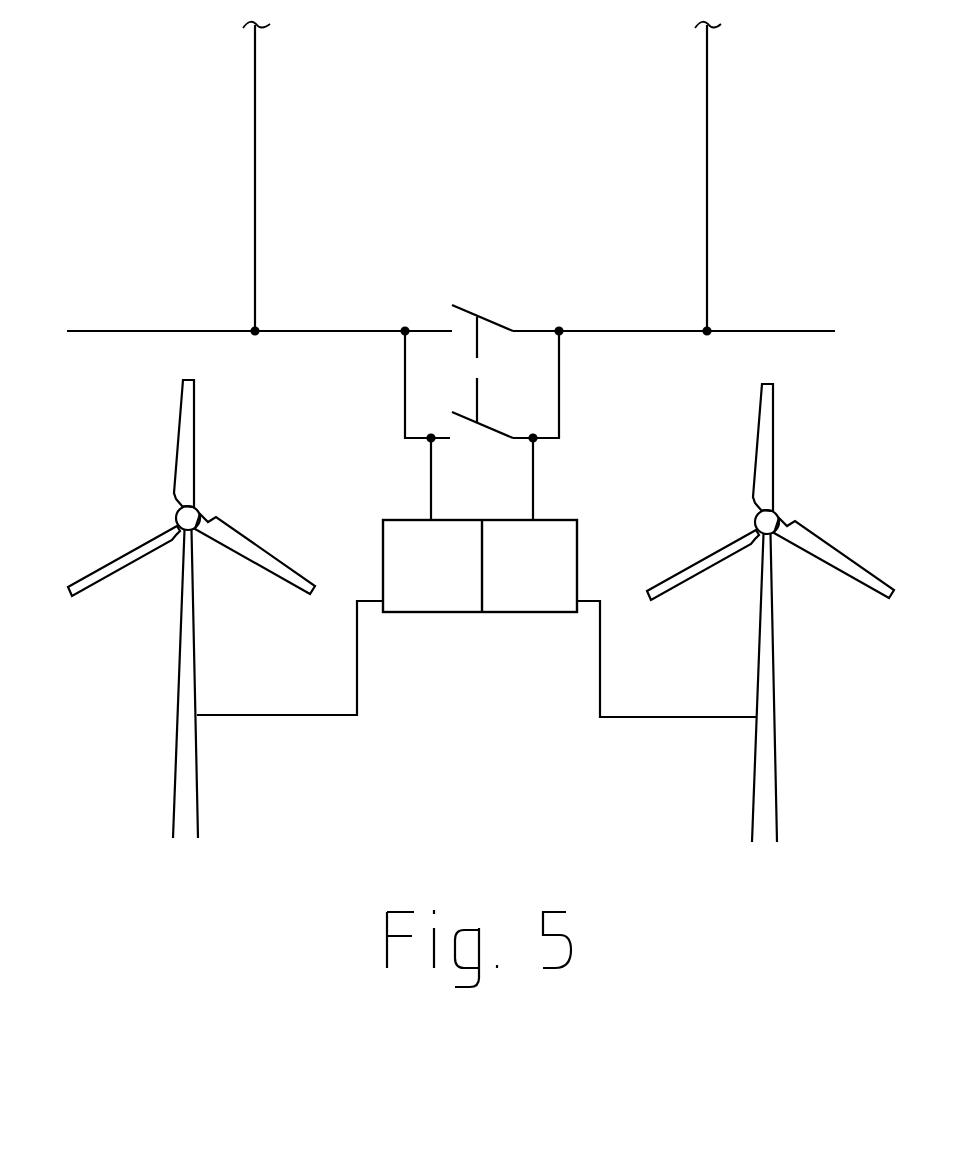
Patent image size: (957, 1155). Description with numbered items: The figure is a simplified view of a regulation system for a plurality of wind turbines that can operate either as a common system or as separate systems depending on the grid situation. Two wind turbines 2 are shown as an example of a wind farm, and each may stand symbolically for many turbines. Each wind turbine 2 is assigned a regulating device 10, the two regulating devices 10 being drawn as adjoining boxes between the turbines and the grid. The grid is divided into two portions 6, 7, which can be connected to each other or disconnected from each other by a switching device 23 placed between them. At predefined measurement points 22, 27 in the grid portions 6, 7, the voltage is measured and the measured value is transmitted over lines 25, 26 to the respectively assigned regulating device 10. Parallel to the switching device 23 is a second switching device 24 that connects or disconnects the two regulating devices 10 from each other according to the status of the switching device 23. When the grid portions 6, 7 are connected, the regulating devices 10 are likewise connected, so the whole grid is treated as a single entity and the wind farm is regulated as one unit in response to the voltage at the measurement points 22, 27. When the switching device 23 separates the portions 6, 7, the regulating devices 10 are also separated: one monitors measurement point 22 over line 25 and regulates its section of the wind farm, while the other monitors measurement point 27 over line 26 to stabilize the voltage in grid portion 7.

The wind turbine 2 is at (185, 788).
The grid portion 6 is at (259, 178).
The grid portion 7 is at (674, 178).
The regulating device 10 is at (440, 587).
The measurement point 22 is at (421, 368).
The switching device 23 is at (482, 351).
The switching device 24 is at (482, 439).
The line 25 is at (409, 478).
The line 26 is at (550, 478).
The measurement point 27 is at (548, 366).